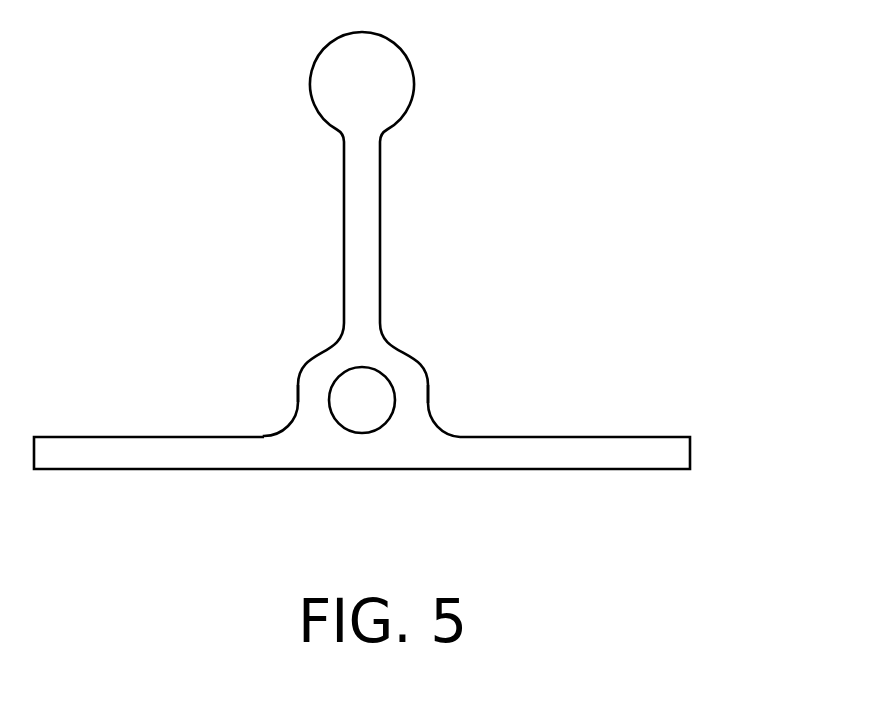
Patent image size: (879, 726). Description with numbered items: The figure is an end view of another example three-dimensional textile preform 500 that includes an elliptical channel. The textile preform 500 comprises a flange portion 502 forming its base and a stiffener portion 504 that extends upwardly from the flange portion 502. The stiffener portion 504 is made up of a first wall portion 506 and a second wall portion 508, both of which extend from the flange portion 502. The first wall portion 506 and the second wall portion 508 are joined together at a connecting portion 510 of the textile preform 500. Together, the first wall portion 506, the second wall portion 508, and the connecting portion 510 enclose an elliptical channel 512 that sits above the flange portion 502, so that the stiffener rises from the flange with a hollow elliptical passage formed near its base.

The 3D textile preform 500 is at (185, 118).
The flange portion 502 is at (185, 470).
The stiffener portion 504 is at (702, 438).
The first wall portion 506 is at (298, 385).
The second wall portion 508 is at (428, 375).
The connecting portion 510 is at (362, 355).
The elliptical channel 512 is at (367, 400).